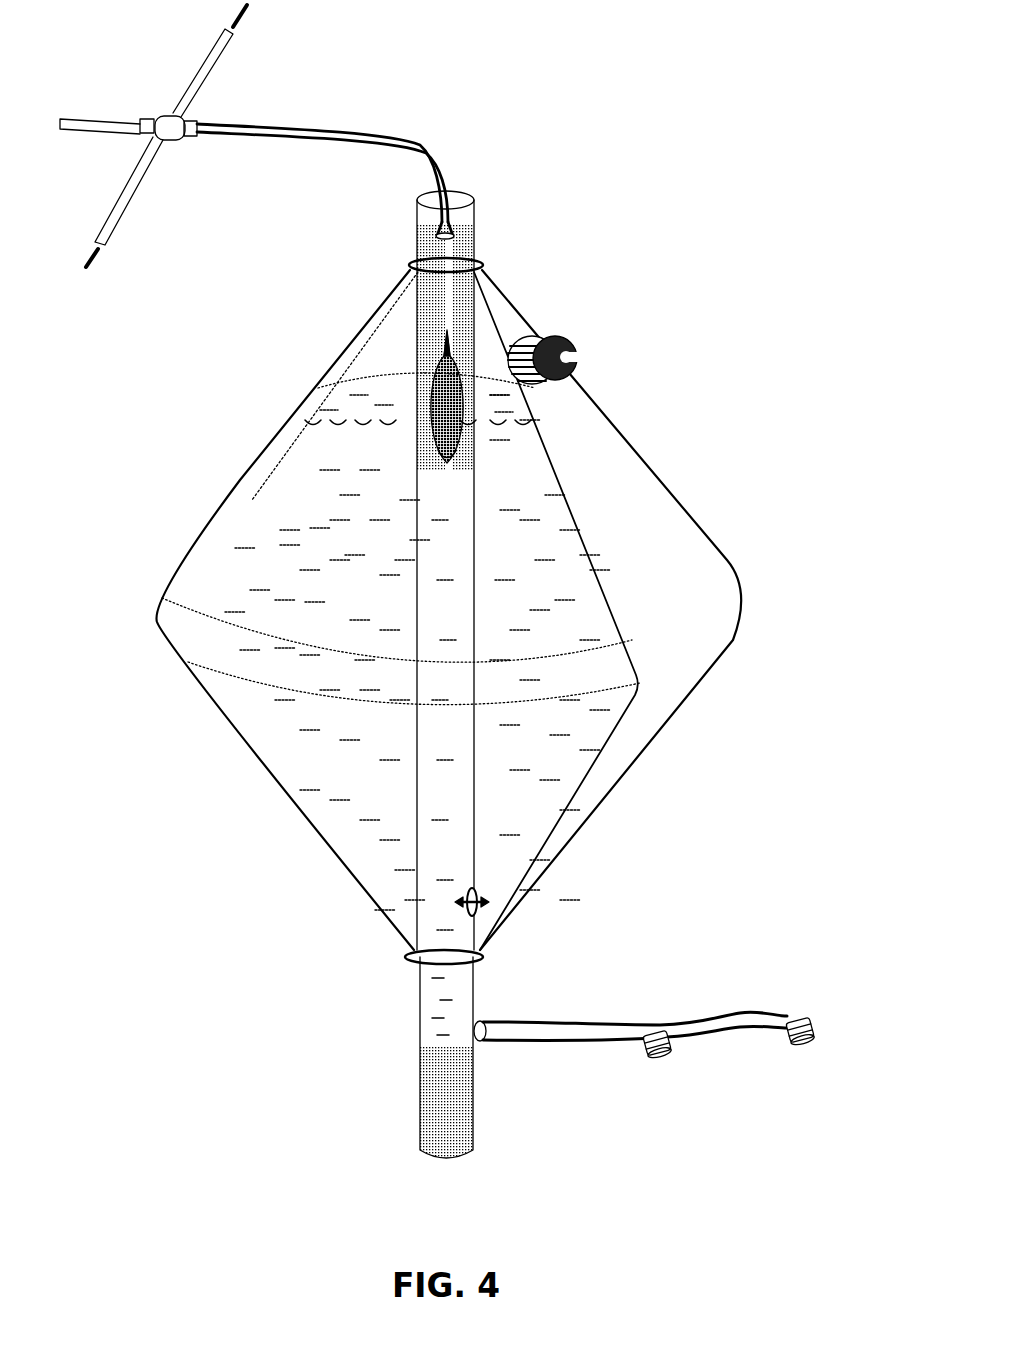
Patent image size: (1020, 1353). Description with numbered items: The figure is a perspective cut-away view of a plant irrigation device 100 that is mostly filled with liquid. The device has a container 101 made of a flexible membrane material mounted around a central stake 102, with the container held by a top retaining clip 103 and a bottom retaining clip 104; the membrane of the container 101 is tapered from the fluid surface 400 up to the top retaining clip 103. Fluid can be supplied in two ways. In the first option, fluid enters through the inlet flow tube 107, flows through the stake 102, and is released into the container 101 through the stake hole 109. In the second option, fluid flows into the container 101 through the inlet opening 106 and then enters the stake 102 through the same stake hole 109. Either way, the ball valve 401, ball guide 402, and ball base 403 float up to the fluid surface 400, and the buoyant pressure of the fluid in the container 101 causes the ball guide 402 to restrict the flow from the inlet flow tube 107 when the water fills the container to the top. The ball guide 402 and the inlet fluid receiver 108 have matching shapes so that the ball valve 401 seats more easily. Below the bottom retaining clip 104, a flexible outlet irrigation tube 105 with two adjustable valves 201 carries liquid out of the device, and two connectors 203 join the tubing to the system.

The plant irrigation device 100 is at (267, 818).
The container 101 is at (268, 705).
The stake 102 is at (437, 1087).
The top retaining clip 103 is at (490, 265).
The bottom retaining clip 104 is at (490, 952).
The flexible outlet irrigation tube 105 is at (556, 1052).
The inlet opening 106 is at (586, 357).
The inlet flow tube 107 is at (448, 172).
The inlet fluid receiver 108 is at (438, 296).
The stake hole 109 is at (490, 888).
The adjustable valves 201 is at (668, 1057).
The connectors 203 is at (462, 233).
The fluid surface 400 is at (322, 423).
The ball valve 401 is at (437, 430).
The ball guide 402 is at (443, 352).
The ball base 403 is at (440, 465).